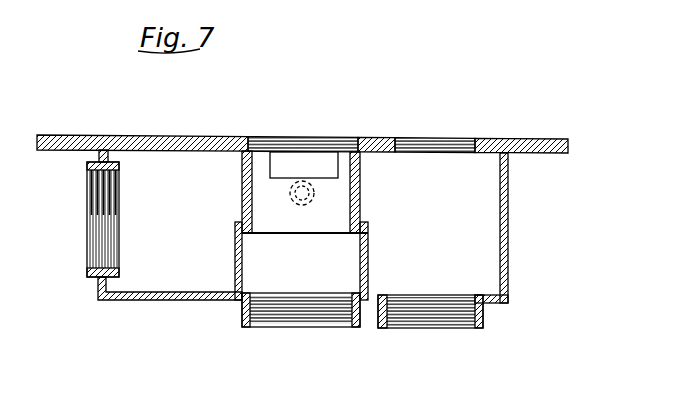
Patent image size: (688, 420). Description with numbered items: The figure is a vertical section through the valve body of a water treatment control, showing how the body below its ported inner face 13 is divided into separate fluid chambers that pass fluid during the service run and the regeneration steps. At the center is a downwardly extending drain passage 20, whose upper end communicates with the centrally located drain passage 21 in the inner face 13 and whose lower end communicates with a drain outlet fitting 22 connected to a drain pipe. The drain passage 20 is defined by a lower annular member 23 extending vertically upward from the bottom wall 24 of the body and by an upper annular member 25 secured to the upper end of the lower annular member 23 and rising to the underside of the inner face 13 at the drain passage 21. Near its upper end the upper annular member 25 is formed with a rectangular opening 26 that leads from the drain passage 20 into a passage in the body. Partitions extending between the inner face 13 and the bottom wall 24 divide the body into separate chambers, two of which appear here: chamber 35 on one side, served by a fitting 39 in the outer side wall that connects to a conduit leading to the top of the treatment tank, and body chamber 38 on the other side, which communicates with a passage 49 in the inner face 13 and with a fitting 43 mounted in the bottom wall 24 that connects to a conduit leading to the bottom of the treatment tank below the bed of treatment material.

The inner face 13 is at (506, 139).
The drain passage 21 is at (344, 138).
The passage 49 is at (460, 138).
The upper annular member 25 is at (247, 201).
The rectangular opening 26 is at (272, 171).
The drain passage 20 is at (333, 215).
The body chamber 38 is at (481, 205).
The lower annular member 23 is at (370, 267).
The drain outlet fitting 22 is at (348, 312).
The fitting 43 is at (376, 318).
The bottom wall 24 is at (180, 302).
The chamber 35 is at (155, 270).
The fitting 39 is at (90, 277).